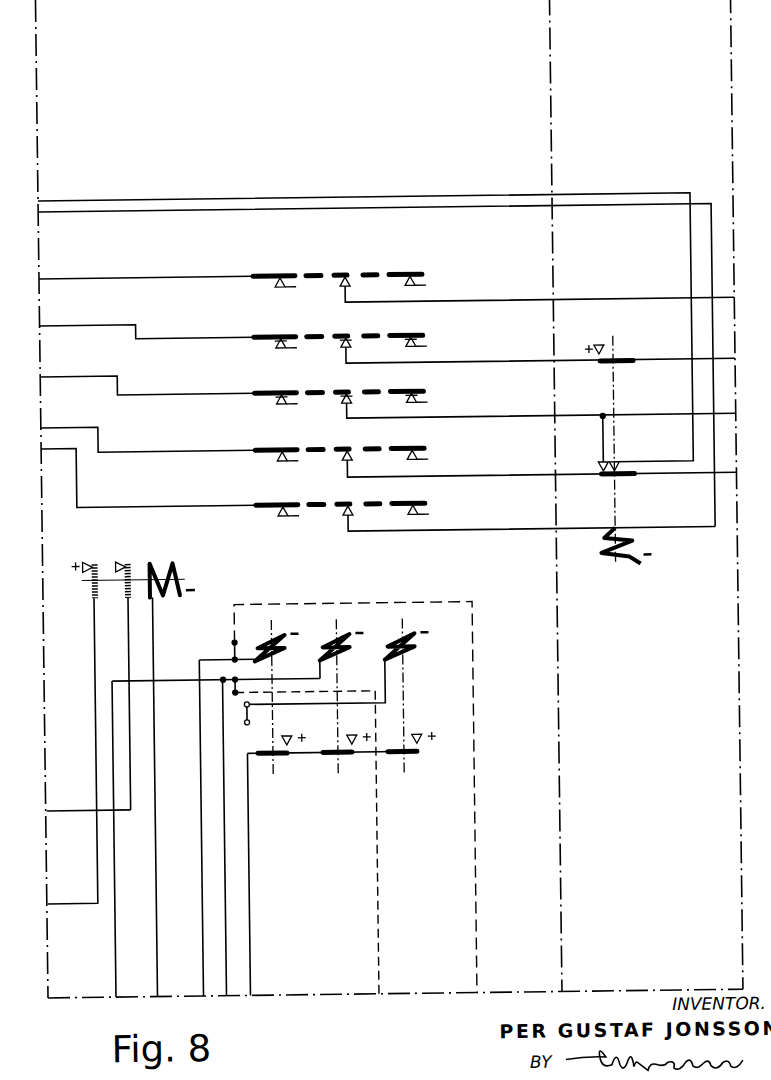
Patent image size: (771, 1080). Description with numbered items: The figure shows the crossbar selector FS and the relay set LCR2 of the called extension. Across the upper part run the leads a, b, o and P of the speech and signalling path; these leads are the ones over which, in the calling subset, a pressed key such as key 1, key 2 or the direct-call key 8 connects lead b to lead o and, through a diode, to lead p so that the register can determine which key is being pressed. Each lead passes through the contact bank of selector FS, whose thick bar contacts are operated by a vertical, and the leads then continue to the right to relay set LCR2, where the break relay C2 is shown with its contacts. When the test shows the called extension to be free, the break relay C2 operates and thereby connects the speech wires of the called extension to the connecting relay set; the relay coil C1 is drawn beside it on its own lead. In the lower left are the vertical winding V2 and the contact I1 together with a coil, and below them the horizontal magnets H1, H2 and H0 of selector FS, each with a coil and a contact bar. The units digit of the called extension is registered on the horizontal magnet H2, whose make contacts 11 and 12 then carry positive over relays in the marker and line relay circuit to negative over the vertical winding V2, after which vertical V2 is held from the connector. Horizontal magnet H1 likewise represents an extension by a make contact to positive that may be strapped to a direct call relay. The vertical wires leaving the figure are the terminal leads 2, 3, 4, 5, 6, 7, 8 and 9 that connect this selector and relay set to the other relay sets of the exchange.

The key 1 is at (366, 328).
The key 2 is at (379, 595).
The terminal wire 3 is at (171, 780).
The terminal wire 4 is at (124, 797).
The terminal wire 5 is at (219, 838).
The terminal wire 6 is at (244, 874).
The terminal wire 7 is at (307, 843).
The key 8 is at (355, 799).
The terminal wire 9 is at (183, 745).
The contact 11 is at (358, 730).
The contact 12 is at (333, 761).
The lead a is at (386, 279).
The lead b is at (387, 333).
The lead o is at (388, 386).
The lead p P is at (389, 441).
The relay C1 and its line C1 is at (378, 497).
The break relay C2 is at (609, 437).
The crossbar selector FS is at (464, 549).
The relay set of the called extension LCR2 is at (648, 770).
The vertical winding V2 is at (121, 580).
The contact I1 is at (122, 686).
The horizontal magnet H1 is at (308, 705).
The horizontal magnet H2 is at (296, 706).
The relay H0 is at (339, 705).